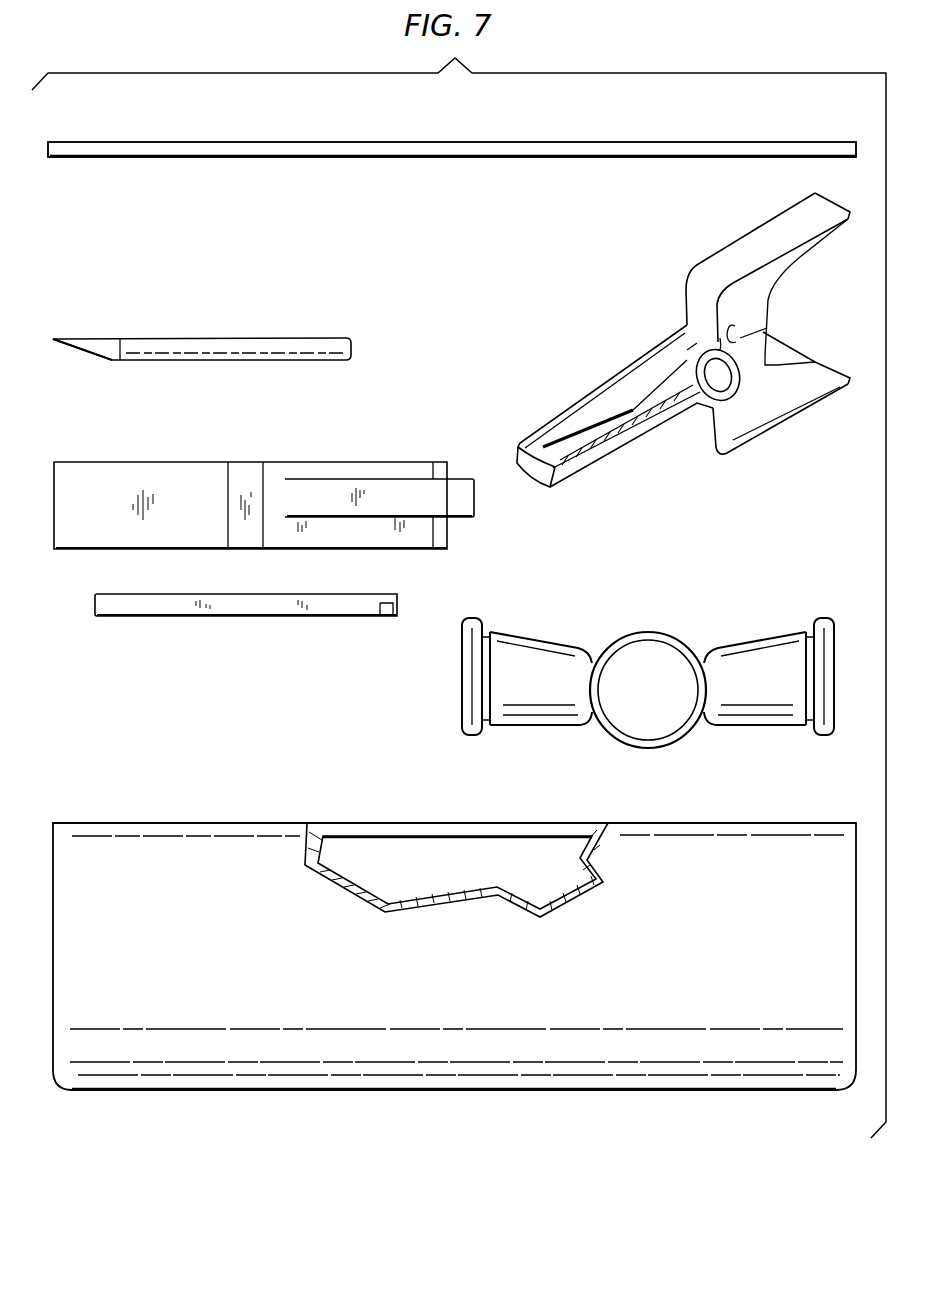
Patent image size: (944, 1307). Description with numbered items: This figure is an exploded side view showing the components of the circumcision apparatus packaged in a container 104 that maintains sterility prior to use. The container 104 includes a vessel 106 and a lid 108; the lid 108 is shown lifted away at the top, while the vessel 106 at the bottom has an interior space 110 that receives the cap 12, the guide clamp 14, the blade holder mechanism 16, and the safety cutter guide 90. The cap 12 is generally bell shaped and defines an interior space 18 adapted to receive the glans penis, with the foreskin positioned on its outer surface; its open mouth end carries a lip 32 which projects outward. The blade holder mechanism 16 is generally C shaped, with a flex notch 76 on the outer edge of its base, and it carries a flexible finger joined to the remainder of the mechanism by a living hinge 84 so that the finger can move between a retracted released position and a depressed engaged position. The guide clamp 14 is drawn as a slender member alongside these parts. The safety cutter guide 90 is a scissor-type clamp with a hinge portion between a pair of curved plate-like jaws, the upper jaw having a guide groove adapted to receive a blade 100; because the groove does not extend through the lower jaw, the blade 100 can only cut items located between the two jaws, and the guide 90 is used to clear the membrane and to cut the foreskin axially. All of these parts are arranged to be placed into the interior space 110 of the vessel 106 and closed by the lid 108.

The lid 108 is at (692, 141).
The container 104 is at (180, 165).
The blade 100 is at (108, 338).
The blade holder mechanism 16 is at (349, 458).
The flex notch 76 is at (241, 478).
The living hinge 84 is at (365, 537).
The guide clamp 14 is at (267, 603).
The safety cutter guide 90 is at (678, 413).
The interior space 18 is at (648, 683).
The cap 12 is at (735, 650).
The lip 32 is at (828, 603).
The interior space 110 is at (443, 850).
The vessel 106 is at (710, 835).